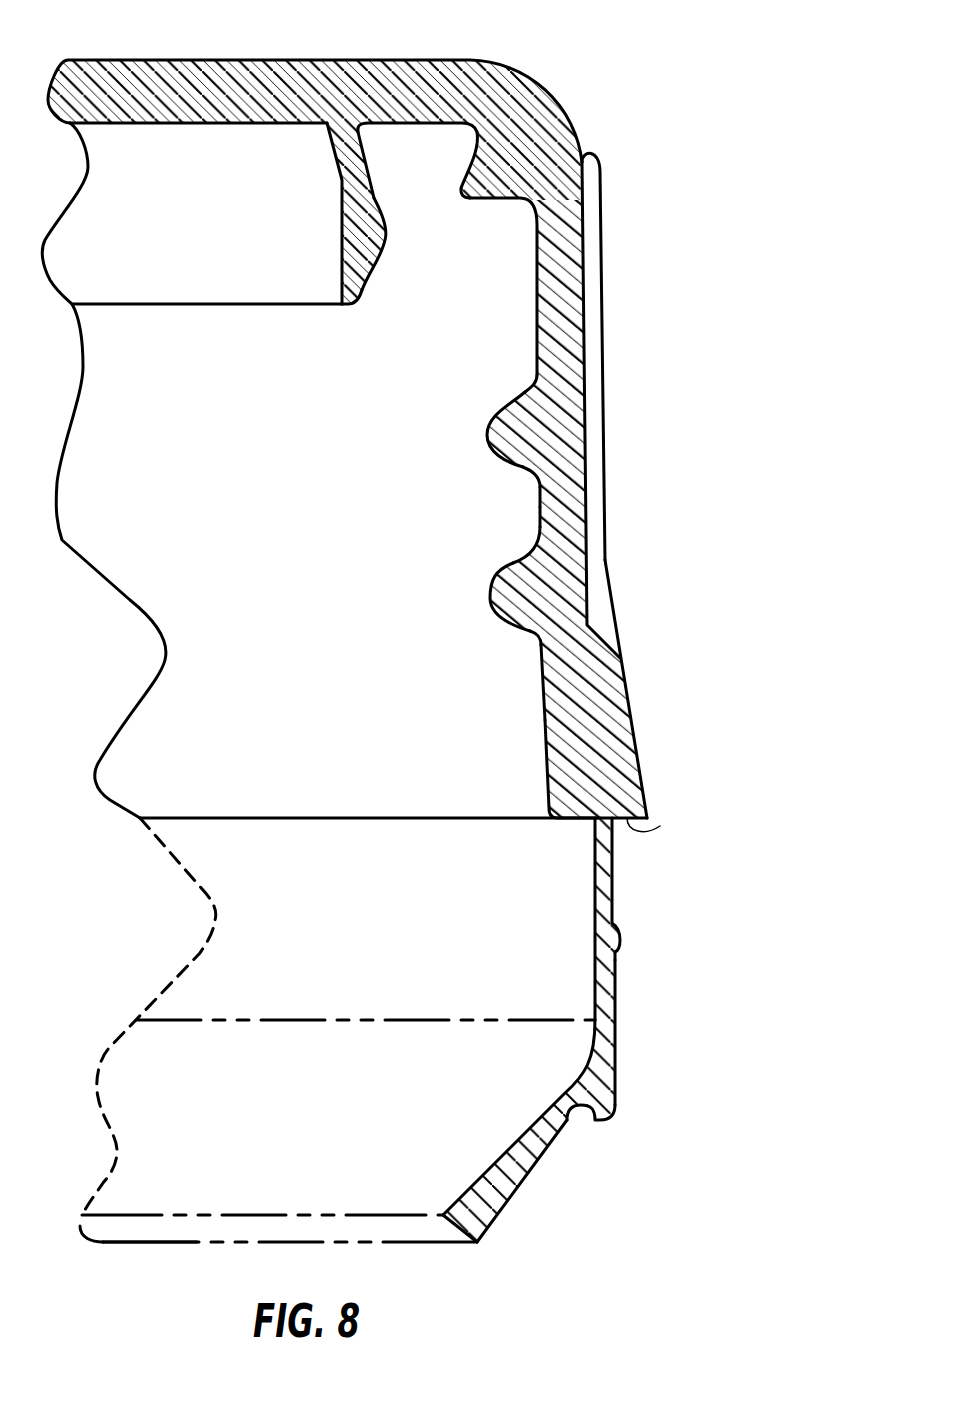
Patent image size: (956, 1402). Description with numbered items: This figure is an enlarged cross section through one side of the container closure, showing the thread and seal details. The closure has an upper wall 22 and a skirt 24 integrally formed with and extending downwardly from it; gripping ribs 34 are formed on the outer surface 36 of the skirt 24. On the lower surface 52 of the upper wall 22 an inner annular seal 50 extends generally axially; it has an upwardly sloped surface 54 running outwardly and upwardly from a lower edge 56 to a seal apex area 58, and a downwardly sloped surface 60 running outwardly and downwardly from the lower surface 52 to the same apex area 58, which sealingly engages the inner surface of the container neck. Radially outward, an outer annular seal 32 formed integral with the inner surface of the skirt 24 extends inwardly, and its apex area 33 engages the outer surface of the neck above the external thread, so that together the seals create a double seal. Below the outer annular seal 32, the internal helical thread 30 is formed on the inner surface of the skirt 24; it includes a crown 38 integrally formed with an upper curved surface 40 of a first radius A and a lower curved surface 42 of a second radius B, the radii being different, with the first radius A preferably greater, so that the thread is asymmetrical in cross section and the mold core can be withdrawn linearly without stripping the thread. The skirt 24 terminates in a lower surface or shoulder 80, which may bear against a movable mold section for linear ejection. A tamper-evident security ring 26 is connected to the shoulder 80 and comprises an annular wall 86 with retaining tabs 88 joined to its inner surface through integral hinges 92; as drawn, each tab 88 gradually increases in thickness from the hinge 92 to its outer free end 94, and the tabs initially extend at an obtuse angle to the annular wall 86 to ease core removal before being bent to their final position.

The upper wall 22 is at (200, 87).
The outer annular seal 32 is at (383, 137).
The lower surface of the upper wall 52 is at (117, 123).
The downwardly sloped surface 60 is at (368, 173).
The apex area of the outer annular seal 33 is at (463, 185).
The seal apex area 58 is at (388, 233).
The inner annular seal 50 is at (357, 270).
The upwardly sloped surface 54 is at (373, 262).
The ribs 34 is at (602, 262).
The lower edge 56 is at (138, 306).
The first radius A is at (523, 392).
The second radius B is at (523, 473).
The upper curved surface 40 is at (505, 415).
The crown 38 is at (487, 440).
The lower curved surface 42 is at (498, 463).
The internal helical thread 30 is at (528, 428).
The outer surface of the skirt 36 is at (627, 690).
The skirt 24 is at (612, 768).
The lower surface or shoulder of the skirt 80 is at (660, 826).
The tamper-evident security ring 26 is at (608, 887).
The annular wall 86 is at (605, 988).
The integral hinge 92 is at (600, 1107).
The retaining tab 88 is at (485, 1142).
The outer free end 94 is at (432, 1230).